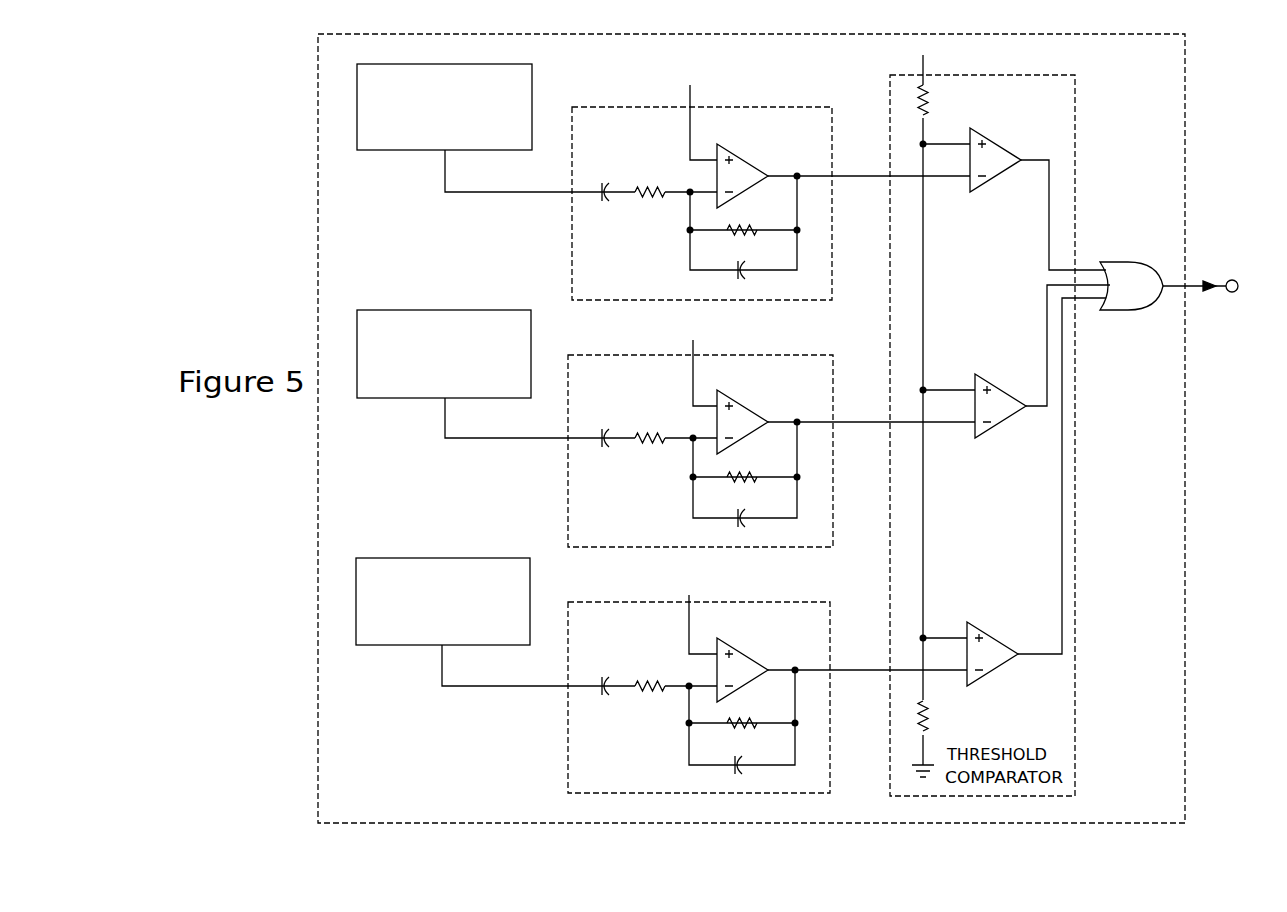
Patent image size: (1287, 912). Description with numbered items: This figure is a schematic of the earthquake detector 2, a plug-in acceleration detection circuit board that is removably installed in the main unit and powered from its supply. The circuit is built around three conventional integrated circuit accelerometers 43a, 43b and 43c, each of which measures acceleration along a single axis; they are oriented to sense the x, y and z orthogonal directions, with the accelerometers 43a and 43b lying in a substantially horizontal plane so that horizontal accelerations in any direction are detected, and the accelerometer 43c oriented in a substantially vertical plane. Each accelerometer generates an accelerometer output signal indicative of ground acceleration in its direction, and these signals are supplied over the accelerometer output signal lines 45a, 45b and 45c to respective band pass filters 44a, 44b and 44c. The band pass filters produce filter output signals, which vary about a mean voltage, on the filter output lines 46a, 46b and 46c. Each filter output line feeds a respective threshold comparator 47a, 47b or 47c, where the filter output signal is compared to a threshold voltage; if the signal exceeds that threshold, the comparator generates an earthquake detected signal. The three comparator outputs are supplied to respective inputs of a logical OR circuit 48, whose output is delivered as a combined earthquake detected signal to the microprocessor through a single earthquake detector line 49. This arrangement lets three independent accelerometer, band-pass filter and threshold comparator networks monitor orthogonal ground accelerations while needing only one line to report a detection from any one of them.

The earthquake detector 2 is at (751, 414).
The accelerometer 43a is at (532, 78).
The accelerometer 43b is at (390, 310).
The accelerometer 43c is at (530, 570).
The band pass filter 44a is at (730, 107).
The band pass filter 44b is at (745, 355).
The band pass filter 44c is at (730, 602).
The accelerometer output signal line 45a is at (458, 192).
The accelerometer output signal line 45b is at (468, 438).
The accelerometer output signal line 45c is at (458, 686).
The filter output line 46a is at (840, 176).
The filter output line 46b is at (838, 422).
The filter output line 46c is at (837, 670).
The threshold comparator 47a is at (1000, 128).
The threshold comparator 47b is at (987, 382).
The threshold comparator 47c is at (990, 623).
The logical OR circuit 48 is at (1115, 262).
The earthquake detector line 49 is at (1232, 279).